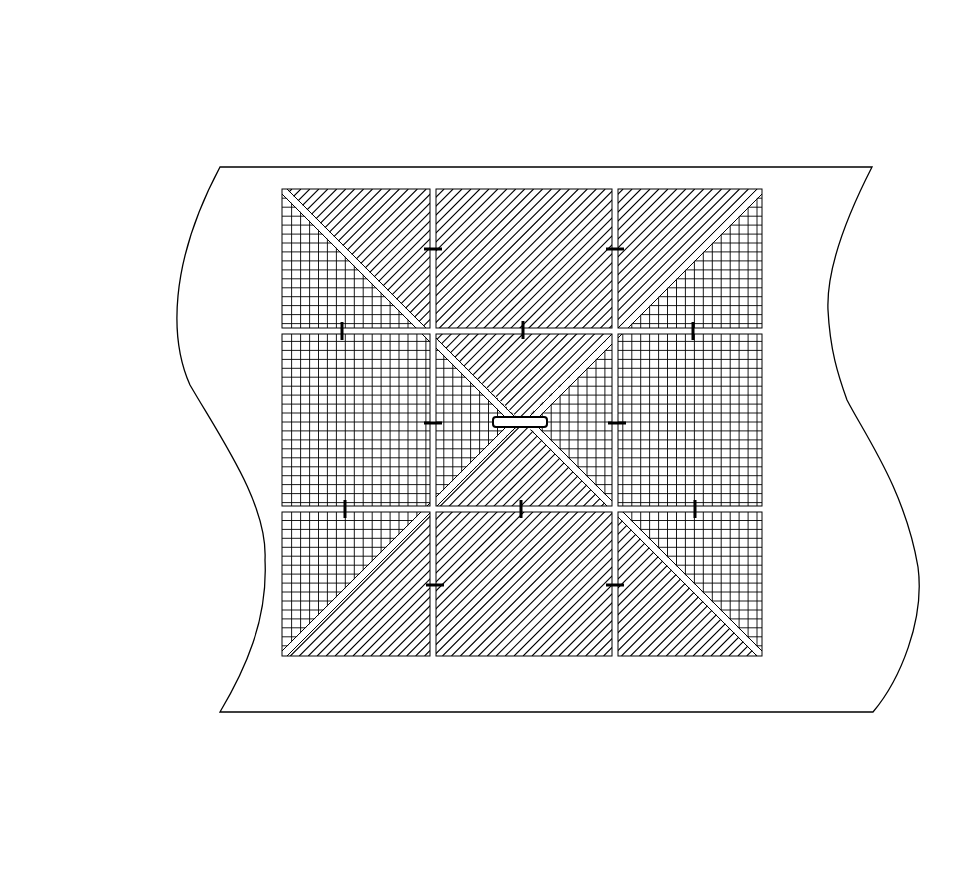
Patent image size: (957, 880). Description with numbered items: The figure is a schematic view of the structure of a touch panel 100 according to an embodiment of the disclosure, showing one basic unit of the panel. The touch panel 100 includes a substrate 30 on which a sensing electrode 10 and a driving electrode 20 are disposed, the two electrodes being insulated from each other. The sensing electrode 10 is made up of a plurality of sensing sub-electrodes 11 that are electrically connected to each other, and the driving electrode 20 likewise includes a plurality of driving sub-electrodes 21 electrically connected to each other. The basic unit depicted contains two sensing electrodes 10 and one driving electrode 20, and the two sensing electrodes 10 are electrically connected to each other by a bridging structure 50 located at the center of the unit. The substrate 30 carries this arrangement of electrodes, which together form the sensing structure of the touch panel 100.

The touch panel 100 is at (230, 152).
The sensing electrode 10 is at (117, 565).
The sensing sub-electrode 11 is at (283, 565).
The driving electrode 20 is at (673, 88).
The driving sub-electrode 21 is at (697, 190).
The substrate 30 is at (238, 681).
The bridging structure 50 is at (515, 427).